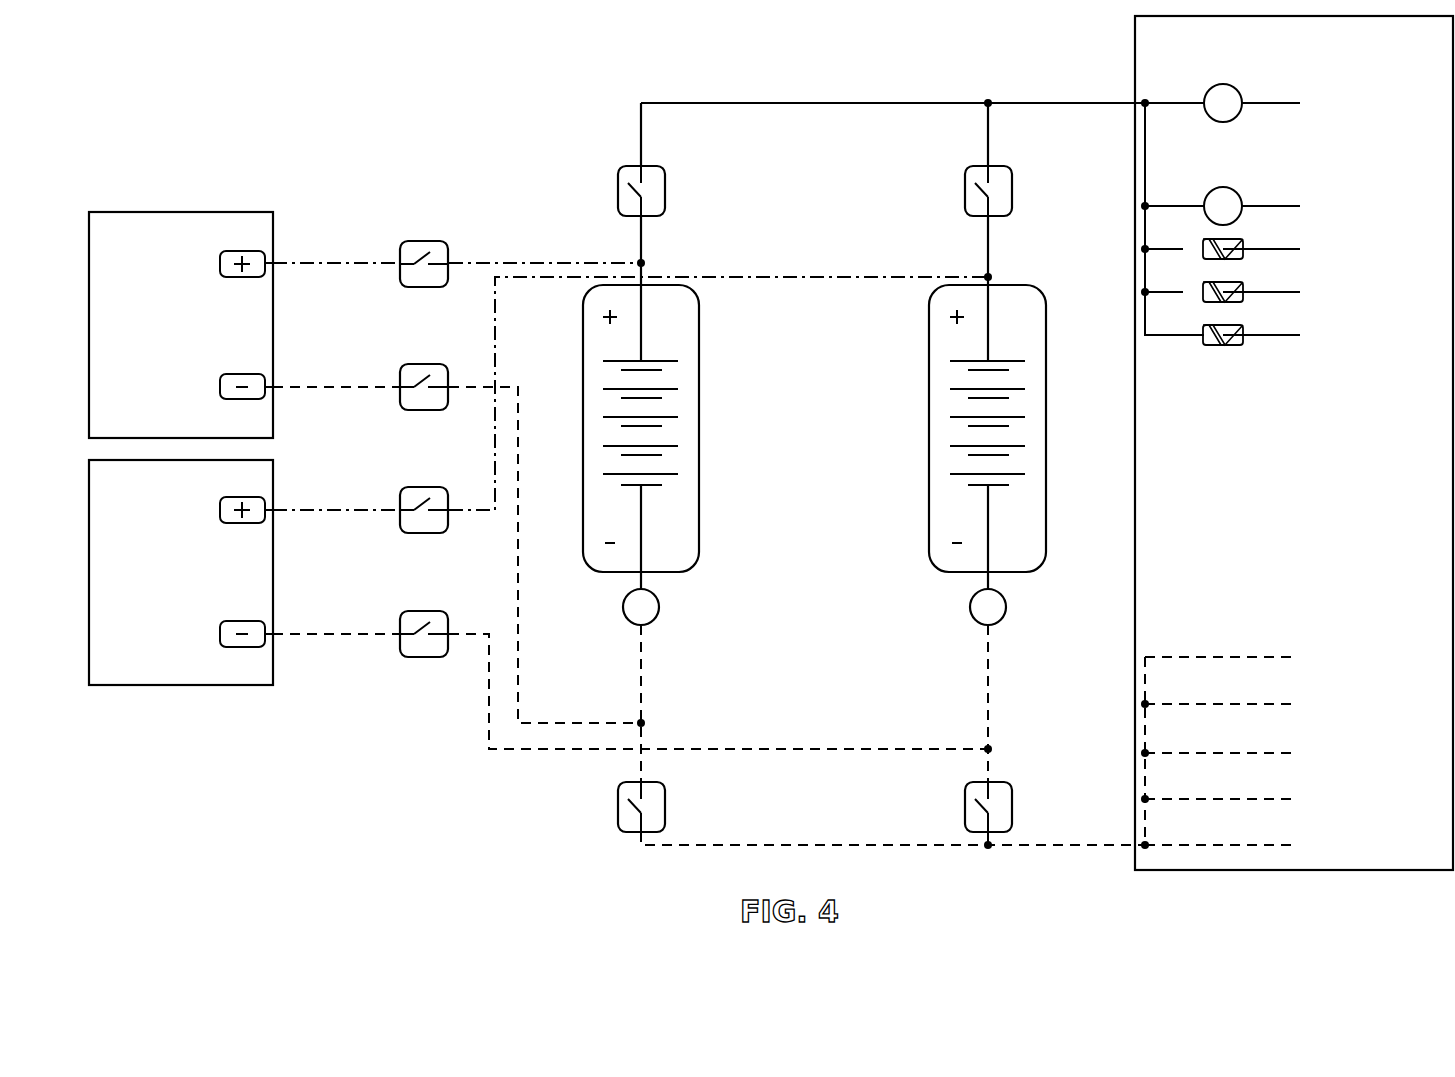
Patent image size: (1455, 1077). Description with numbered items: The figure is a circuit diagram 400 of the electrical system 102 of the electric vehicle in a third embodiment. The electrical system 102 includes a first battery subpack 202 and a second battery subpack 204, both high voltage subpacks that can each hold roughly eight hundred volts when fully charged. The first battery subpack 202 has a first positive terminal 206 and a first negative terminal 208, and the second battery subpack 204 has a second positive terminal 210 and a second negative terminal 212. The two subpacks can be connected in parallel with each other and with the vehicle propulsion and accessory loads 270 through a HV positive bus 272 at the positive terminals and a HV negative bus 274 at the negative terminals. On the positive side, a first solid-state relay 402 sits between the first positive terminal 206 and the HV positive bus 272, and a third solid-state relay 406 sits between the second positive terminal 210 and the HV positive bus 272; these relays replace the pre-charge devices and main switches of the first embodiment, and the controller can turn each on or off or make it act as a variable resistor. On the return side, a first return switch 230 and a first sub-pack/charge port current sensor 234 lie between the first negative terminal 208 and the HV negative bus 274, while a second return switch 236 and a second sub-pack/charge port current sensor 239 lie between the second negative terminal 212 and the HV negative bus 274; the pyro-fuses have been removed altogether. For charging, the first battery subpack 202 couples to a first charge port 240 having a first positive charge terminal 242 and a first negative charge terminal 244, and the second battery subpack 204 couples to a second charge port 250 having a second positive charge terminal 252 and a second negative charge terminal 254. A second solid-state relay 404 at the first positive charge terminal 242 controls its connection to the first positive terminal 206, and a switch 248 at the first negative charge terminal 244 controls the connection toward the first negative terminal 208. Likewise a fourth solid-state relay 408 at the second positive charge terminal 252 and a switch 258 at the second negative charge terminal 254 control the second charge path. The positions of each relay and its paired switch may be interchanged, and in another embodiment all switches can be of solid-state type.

The circuit diagram 400 is at (160, 54).
The electrical system 102 is at (1115, 55).
The first charge port 240 is at (222, 212).
The first positive charge terminal 242 is at (232, 251).
The first negative charge terminal 244 is at (234, 399).
The second charge port 250 is at (152, 685).
The second positive charge terminal 252 is at (232, 497).
The second negative charge terminal 254 is at (234, 647).
The second solid-state relay 404 is at (400, 275).
The switch 248 is at (400, 380).
The fourth solid-state relay 408 is at (400, 520).
The switch 258 is at (400, 645).
The high voltage positive bus 272 is at (724, 103).
The first solid-state relay 402 is at (650, 168).
The third solid-state relay 406 is at (998, 168).
The first battery subpack 202 is at (699, 505).
The second battery subpack 204 is at (1046, 505).
The first positive terminal 206 is at (585, 318).
The first negative terminal 208 is at (605, 572).
The second positive terminal 210 is at (932, 318).
The second negative terminal 212 is at (955, 572).
The first sub-pack/charge port current sensor 234 is at (628, 620).
The second sub-pack/charge port current sensor 239 is at (975, 620).
The first return switch 230 is at (618, 802).
The second return switch 236 is at (965, 802).
The high voltage negative bus 274 is at (768, 845).
The vehicle propulsion and accessory loads 270 is at (1375, 870).